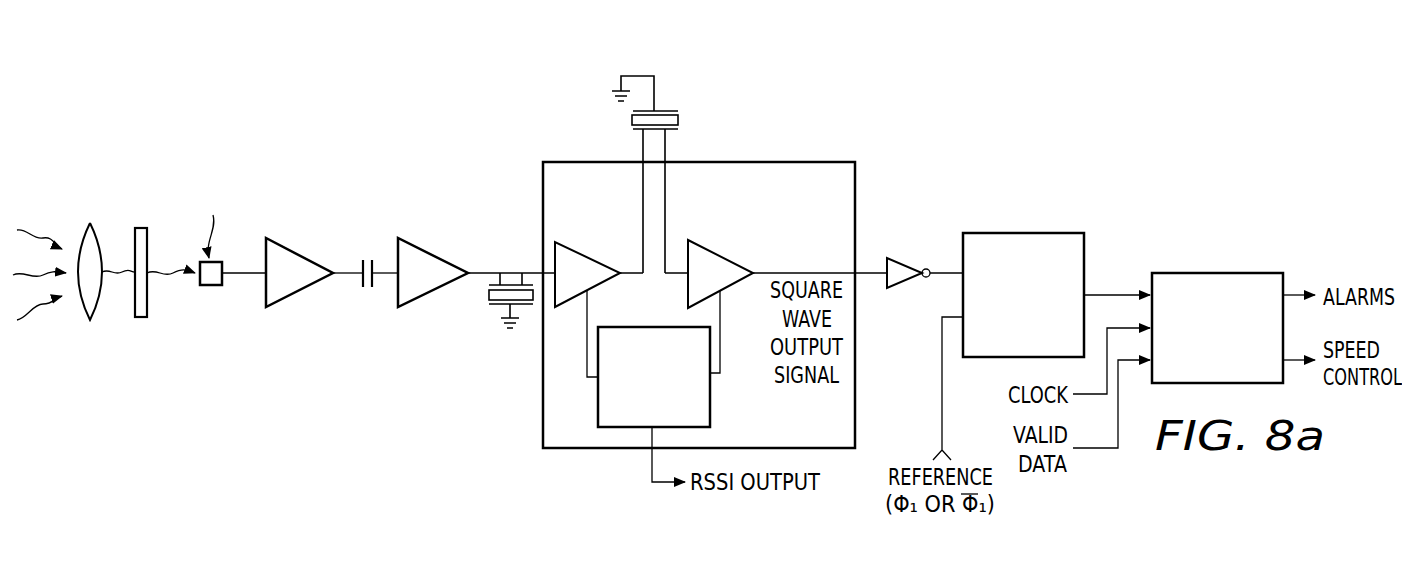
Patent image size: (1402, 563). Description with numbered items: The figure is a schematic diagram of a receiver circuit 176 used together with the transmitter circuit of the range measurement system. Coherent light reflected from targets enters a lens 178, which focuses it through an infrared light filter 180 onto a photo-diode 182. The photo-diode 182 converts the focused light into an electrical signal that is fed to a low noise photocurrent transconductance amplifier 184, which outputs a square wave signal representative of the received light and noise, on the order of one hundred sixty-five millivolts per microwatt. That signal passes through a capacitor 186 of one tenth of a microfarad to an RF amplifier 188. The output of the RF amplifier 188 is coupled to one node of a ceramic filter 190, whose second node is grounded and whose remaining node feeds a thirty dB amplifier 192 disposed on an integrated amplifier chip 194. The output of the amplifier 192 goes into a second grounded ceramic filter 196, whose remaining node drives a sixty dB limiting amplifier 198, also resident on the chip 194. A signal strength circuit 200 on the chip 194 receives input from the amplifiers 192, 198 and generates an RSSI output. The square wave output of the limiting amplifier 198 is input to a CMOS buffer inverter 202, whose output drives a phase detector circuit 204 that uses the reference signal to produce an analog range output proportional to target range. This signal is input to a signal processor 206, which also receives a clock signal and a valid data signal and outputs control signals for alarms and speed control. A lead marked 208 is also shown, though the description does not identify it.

The receiver circuit 176 is at (87, 383).
The lens 178 is at (82, 227).
The infrared light filter 180 is at (138, 227).
The photo-diode 182 is at (208, 287).
The low noise photocurrent transconductance amplifier 184 is at (297, 252).
The capacitor 186 is at (368, 288).
The RF amplifier 188 is at (437, 292).
The ceramic filter 190 is at (510, 272).
The 30 dB amplifier 192 is at (603, 287).
The integrated amplifier chip 194 is at (542, 388).
The ceramic filter 196 is at (665, 110).
The 60 dB limiting amplifier 198 is at (737, 280).
The signal strength circuit 200 is at (673, 417).
The CMOS buffer inverter 202 is at (905, 285).
The phase detector circuit 204 is at (1045, 350).
The signal processor 206 is at (1238, 365).
The connection 208 is at (400, 562).